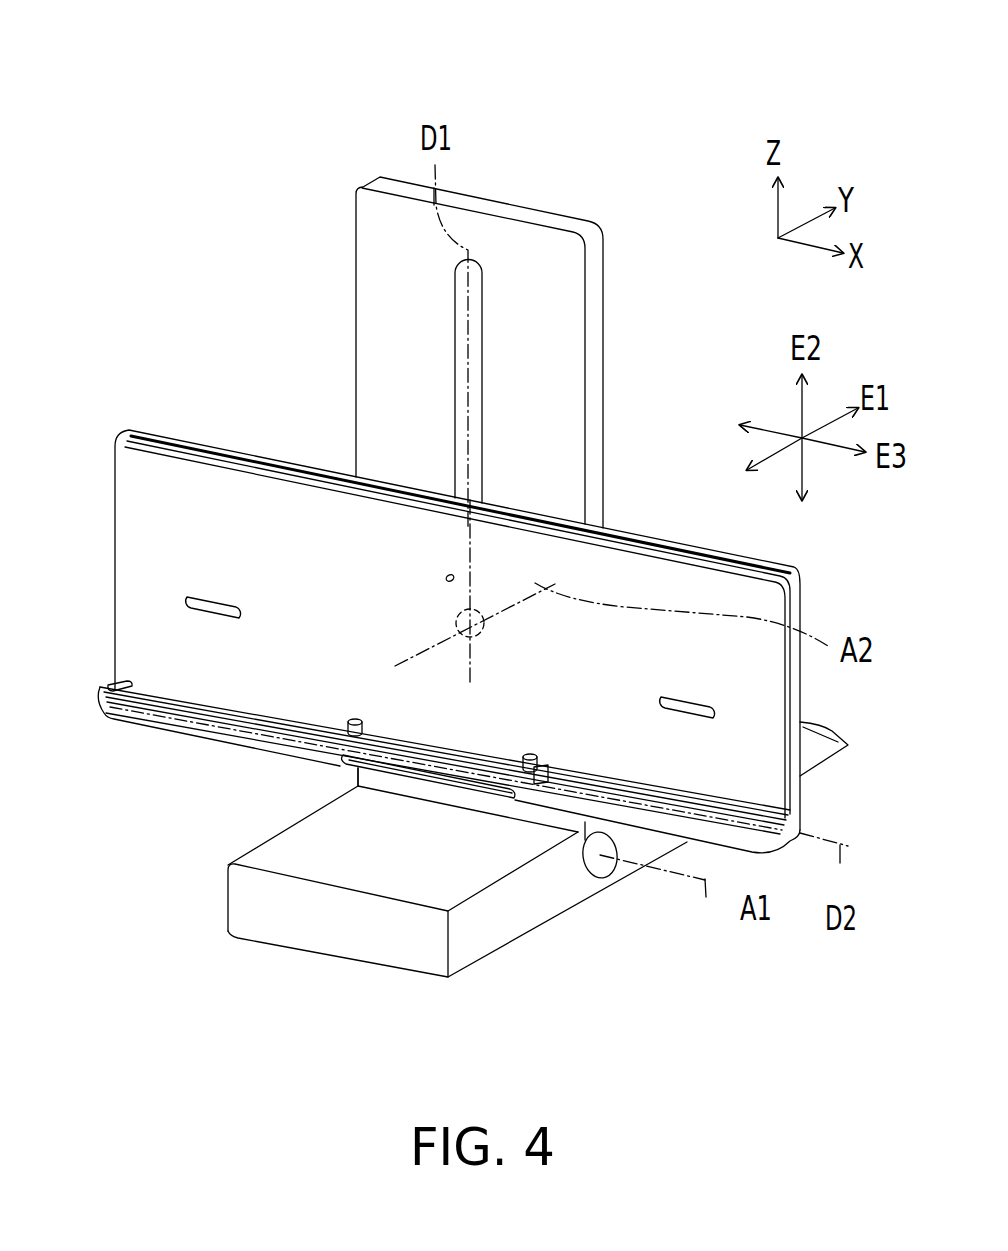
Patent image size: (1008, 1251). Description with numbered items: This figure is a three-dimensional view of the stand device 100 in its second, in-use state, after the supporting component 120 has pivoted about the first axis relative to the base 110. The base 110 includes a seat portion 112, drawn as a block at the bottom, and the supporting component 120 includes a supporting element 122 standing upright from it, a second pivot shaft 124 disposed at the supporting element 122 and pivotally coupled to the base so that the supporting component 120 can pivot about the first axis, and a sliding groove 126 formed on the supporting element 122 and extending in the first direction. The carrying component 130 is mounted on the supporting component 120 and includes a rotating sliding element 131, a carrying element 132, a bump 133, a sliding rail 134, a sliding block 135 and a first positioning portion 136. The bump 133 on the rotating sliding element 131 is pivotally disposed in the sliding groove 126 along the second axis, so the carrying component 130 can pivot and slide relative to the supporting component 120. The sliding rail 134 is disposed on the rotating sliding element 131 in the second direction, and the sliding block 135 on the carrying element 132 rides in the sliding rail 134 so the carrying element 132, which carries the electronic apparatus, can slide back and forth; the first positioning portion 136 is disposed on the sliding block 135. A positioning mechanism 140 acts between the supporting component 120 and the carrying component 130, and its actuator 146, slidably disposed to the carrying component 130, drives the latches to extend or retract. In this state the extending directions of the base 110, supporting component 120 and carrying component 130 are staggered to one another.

The stand device 100 is at (145, 55).
The base 110 is at (275, 968).
The seat portion 112 is at (495, 930).
The supporting component 120 is at (345, 167).
The supporting element 122 is at (570, 305).
The second pivot shaft 124 is at (610, 865).
The sliding groove 126 is at (457, 323).
The carrying component 130 is at (110, 412).
The rotating sliding element 131 is at (189, 440).
The carrying element 132 is at (140, 520).
The bump 133 is at (465, 622).
The sliding rail 134 is at (131, 686).
The sliding block 135 is at (497, 752).
The first positioning portion 136 is at (345, 732).
The positioning mechanism 140 is at (312, 791).
The actuator 146 is at (345, 758).